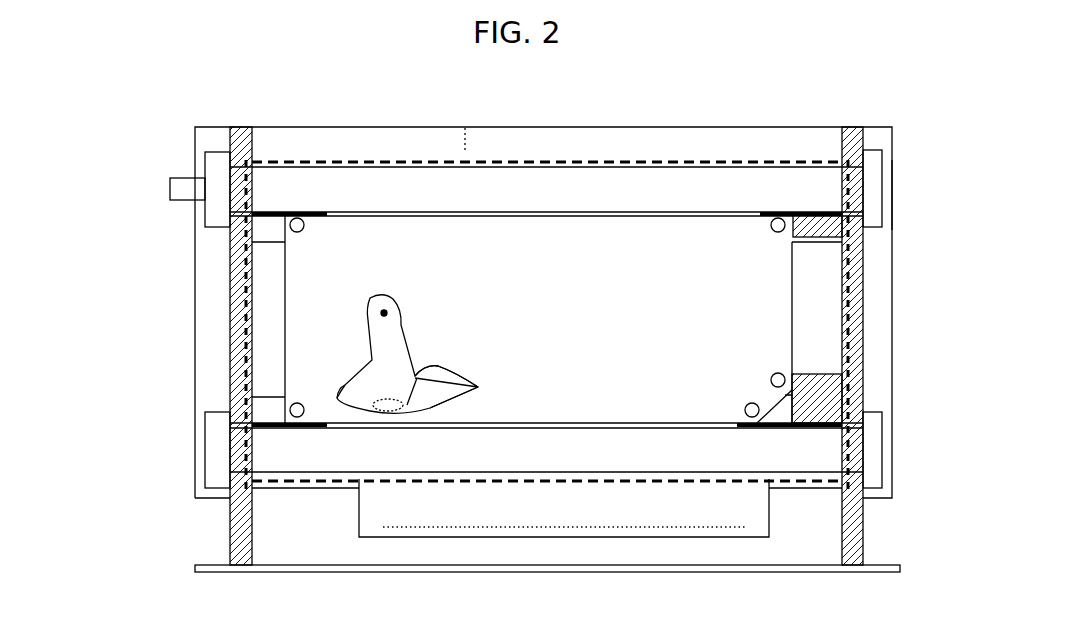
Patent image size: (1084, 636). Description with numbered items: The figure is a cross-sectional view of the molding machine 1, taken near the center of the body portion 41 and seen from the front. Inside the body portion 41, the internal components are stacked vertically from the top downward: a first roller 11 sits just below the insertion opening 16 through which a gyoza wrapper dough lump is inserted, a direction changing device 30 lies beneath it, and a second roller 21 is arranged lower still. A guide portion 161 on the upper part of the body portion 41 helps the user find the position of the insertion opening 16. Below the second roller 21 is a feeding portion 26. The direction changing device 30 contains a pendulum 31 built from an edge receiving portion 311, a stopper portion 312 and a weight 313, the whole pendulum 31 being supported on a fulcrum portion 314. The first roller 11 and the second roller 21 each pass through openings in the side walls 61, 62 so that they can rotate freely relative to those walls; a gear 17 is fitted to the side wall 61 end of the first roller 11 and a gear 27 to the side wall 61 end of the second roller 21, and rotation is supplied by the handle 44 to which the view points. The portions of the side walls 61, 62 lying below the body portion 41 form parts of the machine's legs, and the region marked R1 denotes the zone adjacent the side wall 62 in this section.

The molding machine 1 is at (909, 123).
The first roller 11 is at (762, 162).
The insertion opening 16 is at (568, 127).
The guide portion 161 is at (472, 127).
The gear 17 is at (882, 217).
The second roller 21 is at (832, 452).
The feeding portion 26 is at (359, 524).
The gear 27 is at (882, 478).
The direction changing device 30 is at (792, 308).
The pendulum 31 is at (420, 340).
The edge receiving portion 311 is at (478, 388).
The stopper portion 312 is at (340, 388).
The weight 313 is at (425, 372).
The fulcrum portion 314 is at (384, 313).
The body portion 41 is at (892, 190).
The handle 44 is at (163, 190).
The side wall 61 is at (863, 505).
The side wall 62 is at (255, 515).
The region R1 is at (242, 358).